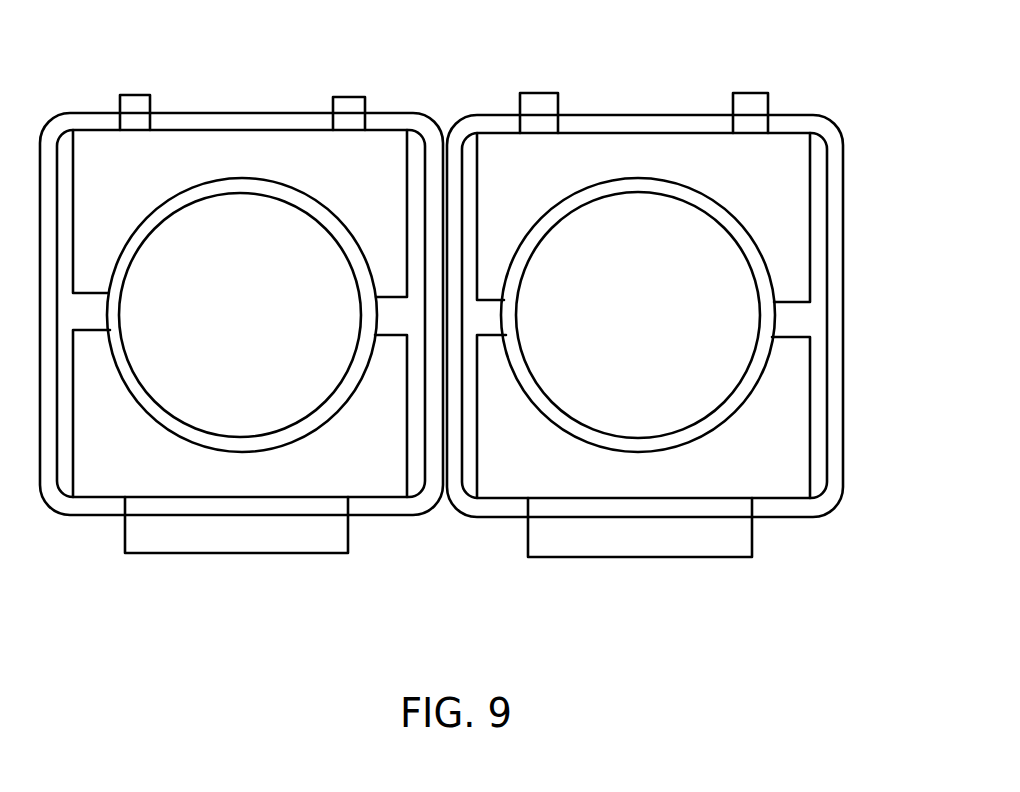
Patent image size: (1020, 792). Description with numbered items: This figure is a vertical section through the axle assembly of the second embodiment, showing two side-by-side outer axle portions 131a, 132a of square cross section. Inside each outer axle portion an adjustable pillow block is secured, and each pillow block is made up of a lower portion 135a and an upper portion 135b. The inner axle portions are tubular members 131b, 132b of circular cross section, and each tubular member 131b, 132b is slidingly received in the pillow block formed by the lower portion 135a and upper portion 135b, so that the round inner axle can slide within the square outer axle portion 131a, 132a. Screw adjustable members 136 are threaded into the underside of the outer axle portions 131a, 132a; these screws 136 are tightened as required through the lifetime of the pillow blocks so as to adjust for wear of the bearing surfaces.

The outer axle portion 131a is at (822, 115).
The tubular member 131b is at (663, 190).
The outer axle portion 132a is at (80, 115).
The tubular member 132b is at (260, 188).
The lower portion 135a is at (790, 455).
The upper portion 135b is at (795, 203).
The screw adjustable member 136 is at (203, 545).